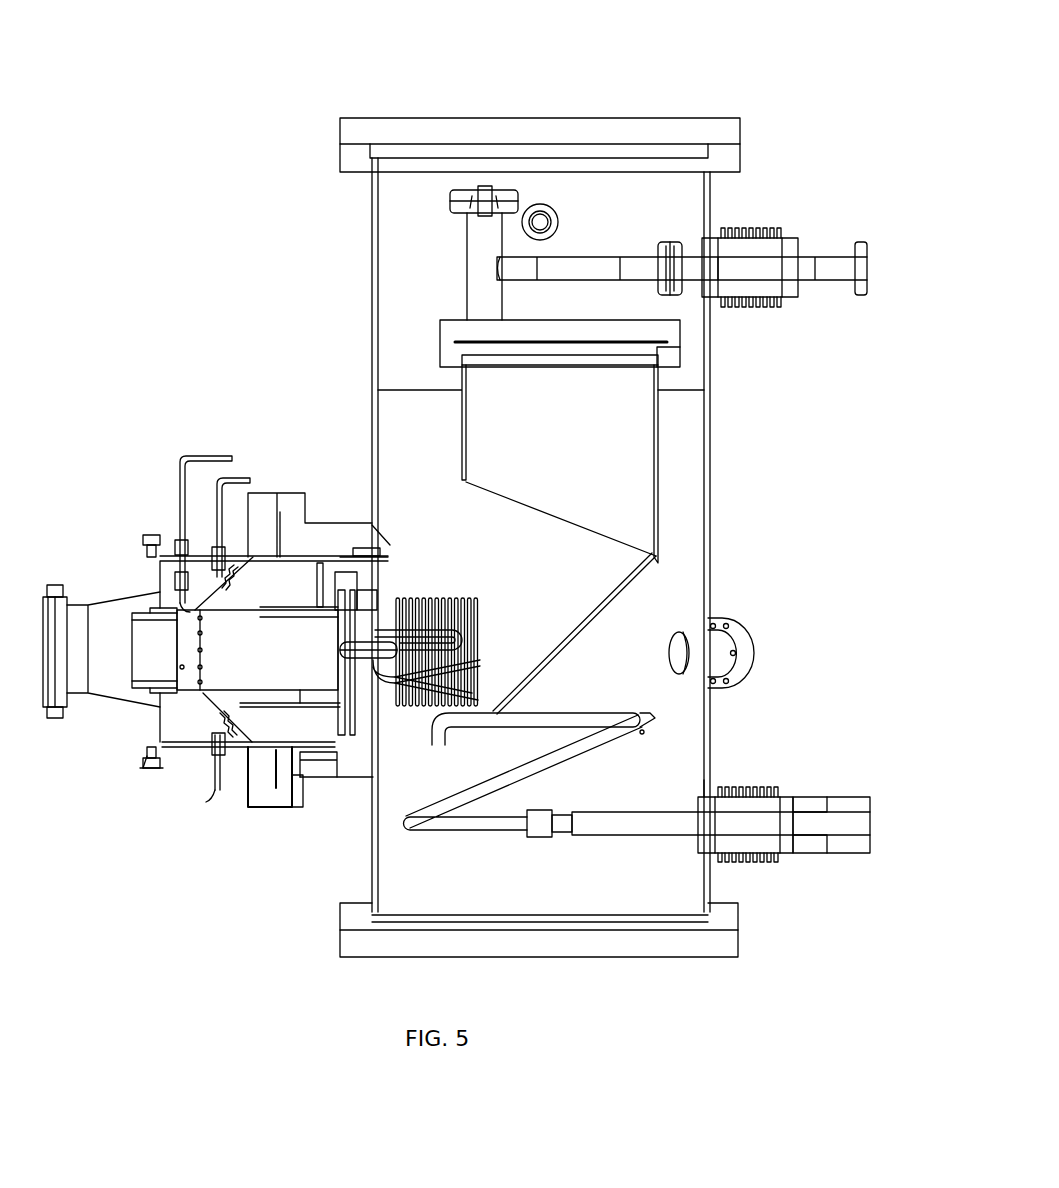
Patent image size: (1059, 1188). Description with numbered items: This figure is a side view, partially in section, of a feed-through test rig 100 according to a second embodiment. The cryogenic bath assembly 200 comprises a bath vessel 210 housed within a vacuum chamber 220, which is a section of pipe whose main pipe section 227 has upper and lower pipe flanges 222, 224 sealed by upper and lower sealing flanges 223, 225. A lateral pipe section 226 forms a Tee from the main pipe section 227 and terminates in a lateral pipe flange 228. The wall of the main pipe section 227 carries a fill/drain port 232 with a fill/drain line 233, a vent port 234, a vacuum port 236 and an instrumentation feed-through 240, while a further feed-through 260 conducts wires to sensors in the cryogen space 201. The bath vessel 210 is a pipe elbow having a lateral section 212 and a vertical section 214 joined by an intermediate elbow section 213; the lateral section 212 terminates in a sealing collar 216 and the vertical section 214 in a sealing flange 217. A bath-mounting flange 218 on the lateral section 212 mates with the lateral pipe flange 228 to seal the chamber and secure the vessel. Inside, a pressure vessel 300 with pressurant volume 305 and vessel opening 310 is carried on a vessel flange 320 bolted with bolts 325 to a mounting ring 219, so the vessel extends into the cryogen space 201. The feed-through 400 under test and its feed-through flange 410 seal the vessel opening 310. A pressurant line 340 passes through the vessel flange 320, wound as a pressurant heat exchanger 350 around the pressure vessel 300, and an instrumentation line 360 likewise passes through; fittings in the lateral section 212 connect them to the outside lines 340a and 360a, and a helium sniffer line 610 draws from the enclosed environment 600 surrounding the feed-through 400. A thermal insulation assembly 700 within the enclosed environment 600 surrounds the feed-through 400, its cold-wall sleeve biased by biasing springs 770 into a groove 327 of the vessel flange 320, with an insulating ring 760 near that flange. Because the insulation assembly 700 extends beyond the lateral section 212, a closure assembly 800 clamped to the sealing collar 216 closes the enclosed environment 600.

The test rig 100 is at (764, 82).
The cryogenic bath assembly 200 is at (442, 480).
The cryogen space 201 is at (557, 598).
The bath vessel 210 is at (462, 380).
The lateral section 212 is at (200, 748).
The intermediate elbow section 213 is at (590, 635).
The vertical section 214 is at (658, 400).
The sealing collar 216 is at (163, 762).
The sealing flange 217 is at (672, 352).
The bath-mounting flange 218 is at (270, 808).
The mounting ring 219 is at (323, 764).
The vacuum chamber 220 is at (732, 482).
The upper pipe flange 222 is at (740, 158).
The upper sealing flange 223 is at (740, 130).
The lower pipe flange 224 is at (740, 917).
The lower sealing flange 225 is at (740, 945).
The lateral pipe section 226 is at (330, 778).
The main pipe section 227 is at (712, 524).
The lateral pipe flange 228 is at (290, 810).
The fill/drain port 232 is at (796, 856).
The fill/drain line 233 is at (480, 832).
The vent port 234 is at (798, 228).
The vacuum port 236 is at (740, 640).
The instrumentation feed-through 240 is at (562, 224).
The further feed-through 260 is at (485, 190).
The pressure vessel 300 is at (375, 700).
The pressurant volume 305 is at (387, 668).
The vessel opening 310 is at (340, 625).
The vessel flange 320 is at (346, 572).
The bolts 325 is at (322, 560).
The groove 327 is at (362, 610).
The pressurant line 340 is at (232, 736).
The outside pressurant line 340a is at (218, 792).
The pressurant heat exchanger 350 is at (455, 588).
The instrumentation line 360 is at (409, 606).
The outside instrumentation line 360a is at (195, 456).
The feed-through 400 is at (333, 637).
The feed-through flange 410 is at (340, 650).
The enclosed environment 600 is at (242, 596).
The helium sniffer line 610 is at (250, 478).
The thermal insulation assembly 700 is at (192, 700).
The insulating ring 760 is at (320, 684).
The biasing springs 770 is at (275, 662).
The closure assembly 800 is at (118, 594).